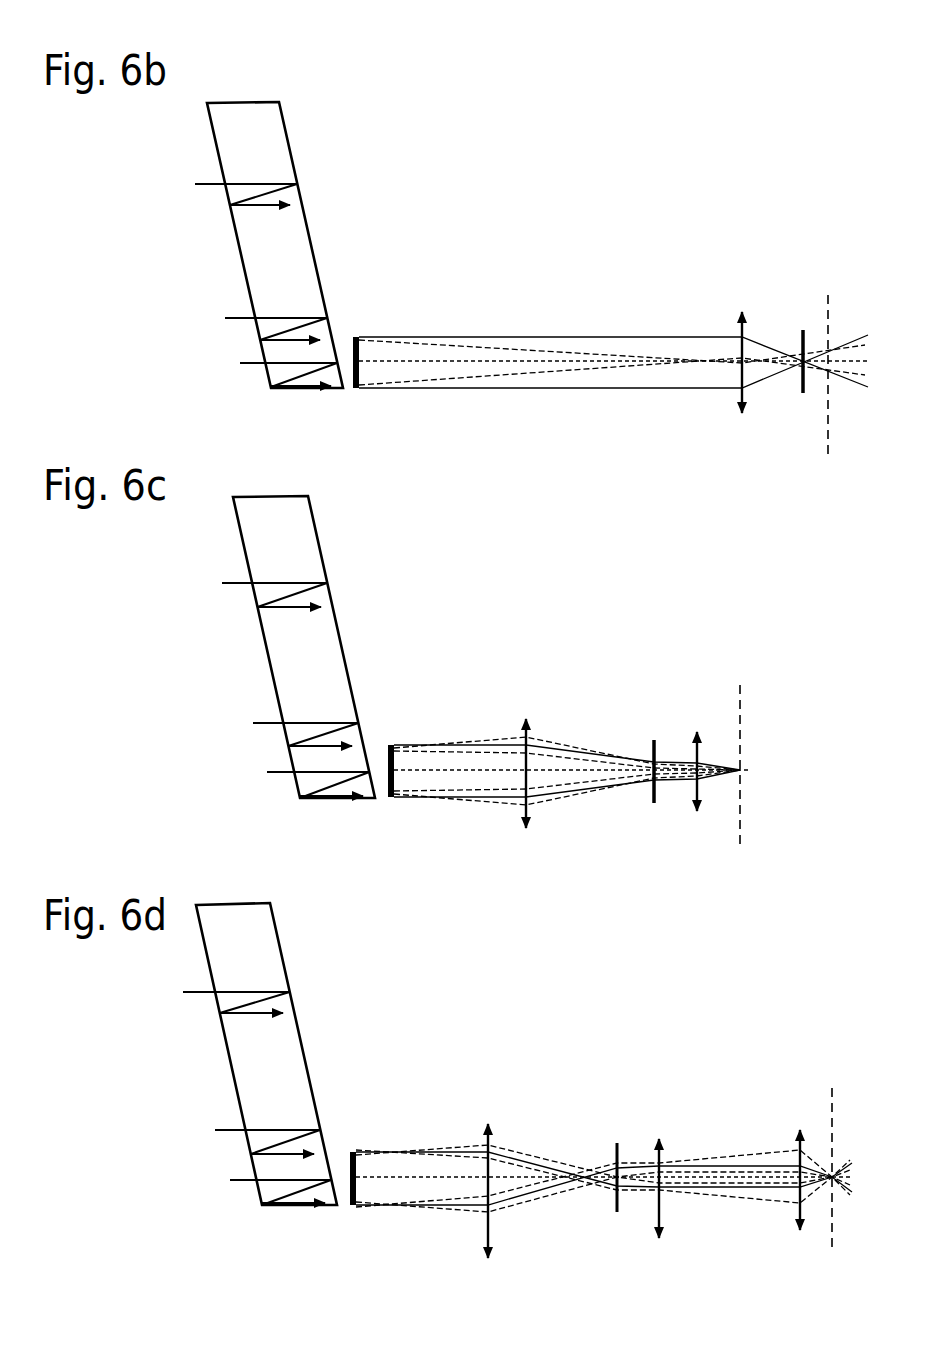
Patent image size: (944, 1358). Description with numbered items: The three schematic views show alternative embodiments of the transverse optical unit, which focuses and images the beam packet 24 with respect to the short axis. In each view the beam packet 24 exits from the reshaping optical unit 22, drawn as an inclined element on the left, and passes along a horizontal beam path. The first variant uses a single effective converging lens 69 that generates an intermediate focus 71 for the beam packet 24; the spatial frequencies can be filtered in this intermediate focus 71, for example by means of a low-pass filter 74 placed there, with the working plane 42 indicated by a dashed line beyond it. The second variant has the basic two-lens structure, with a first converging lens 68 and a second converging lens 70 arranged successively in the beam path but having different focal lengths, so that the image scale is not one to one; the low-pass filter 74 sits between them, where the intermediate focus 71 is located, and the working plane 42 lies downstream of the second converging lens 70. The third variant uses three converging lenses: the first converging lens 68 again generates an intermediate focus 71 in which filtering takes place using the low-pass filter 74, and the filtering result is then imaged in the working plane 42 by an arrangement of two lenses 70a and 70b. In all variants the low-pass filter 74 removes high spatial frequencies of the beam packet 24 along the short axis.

In FIG. 6b, the reshaping optical unit 22 is at (268, 86).
In FIG. 6c, the reshaping optical unit 22 is at (249, 491).
In FIG. 6d, the reshaping optical unit 22 is at (216, 897).
In FIG. 6b, the beam packet 24 is at (348, 356).
In FIG. 6c, the beam packet 24 is at (381, 765).
In FIG. 6d, the beam packet 24 is at (344, 1168).
In FIG. 6b, the working plane 42 is at (830, 316).
In FIG. 6c, the working plane 42 is at (742, 706).
In FIG. 6d, the working plane 42 is at (835, 1110).
In FIG. 6c, the first converging lens 68 is at (524, 836).
In FIG. 6d, the first converging lens 68 is at (488, 1247).
In FIG. 6b, the single effective converging lens 69 is at (738, 430).
In FIG. 6c, the second converging lens 70 is at (697, 820).
In FIG. 6d, the lens 70a is at (659, 1247).
In FIG. 6d, the lens 70b is at (799, 1242).
In FIG. 6b, the intermediate focus 71 is at (798, 324).
In FIG. 6c, the intermediate focus 71 is at (654, 810).
In FIG. 6b, the optical low-pass filter 74 is at (803, 405).
In FIG. 6c, the optical low-pass filter 74 is at (651, 734).
In FIG. 6d, the optical low-pass filter 74 is at (614, 1138).